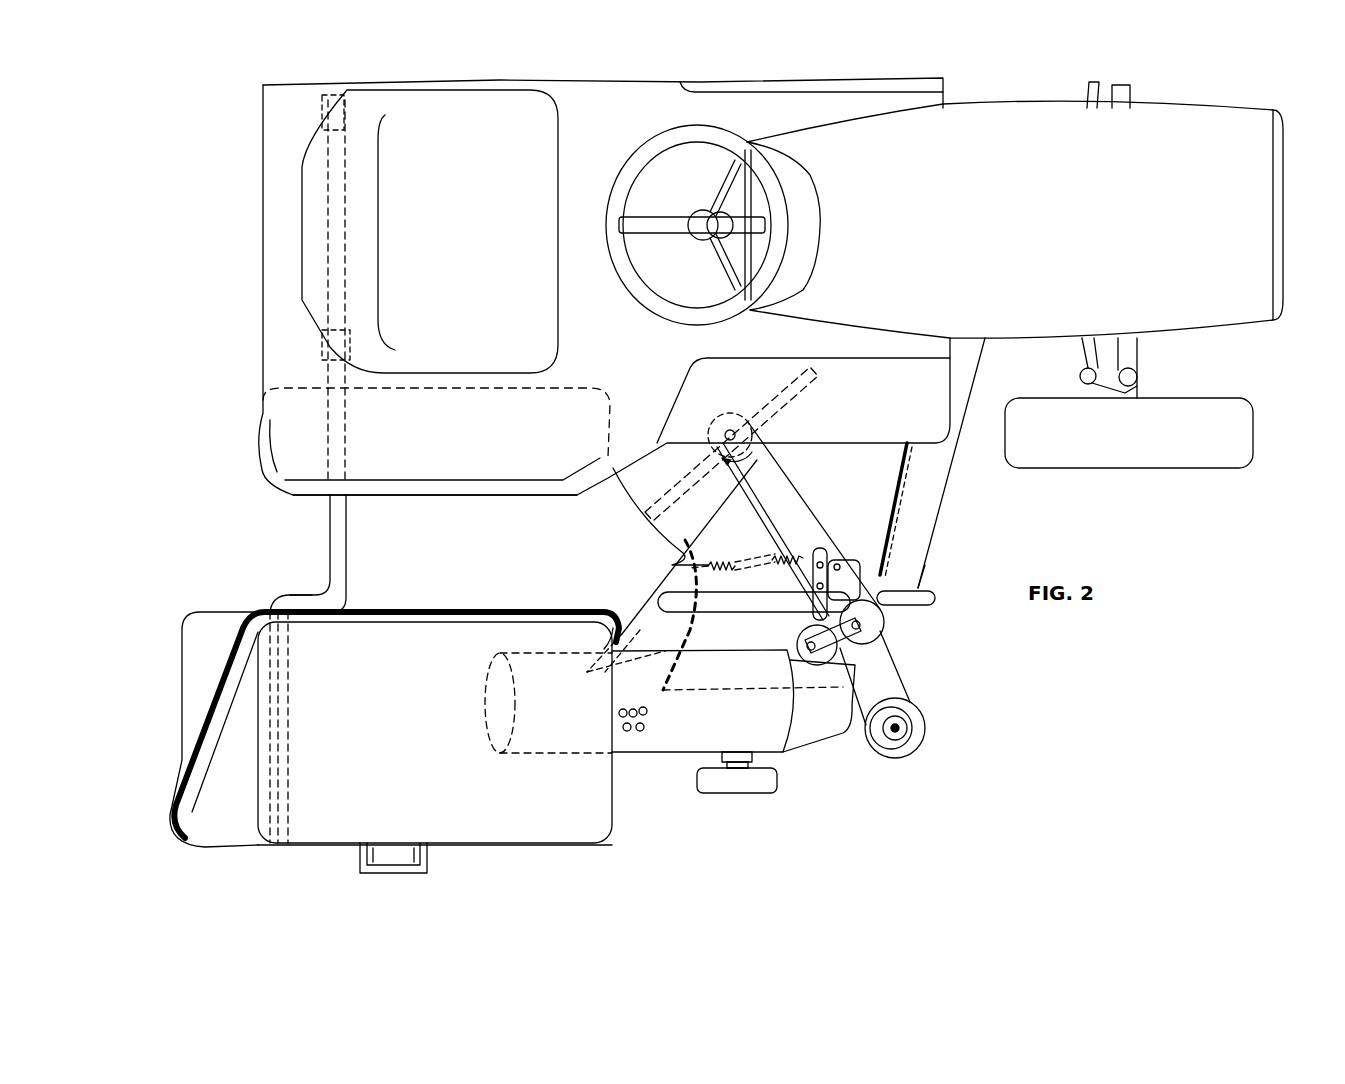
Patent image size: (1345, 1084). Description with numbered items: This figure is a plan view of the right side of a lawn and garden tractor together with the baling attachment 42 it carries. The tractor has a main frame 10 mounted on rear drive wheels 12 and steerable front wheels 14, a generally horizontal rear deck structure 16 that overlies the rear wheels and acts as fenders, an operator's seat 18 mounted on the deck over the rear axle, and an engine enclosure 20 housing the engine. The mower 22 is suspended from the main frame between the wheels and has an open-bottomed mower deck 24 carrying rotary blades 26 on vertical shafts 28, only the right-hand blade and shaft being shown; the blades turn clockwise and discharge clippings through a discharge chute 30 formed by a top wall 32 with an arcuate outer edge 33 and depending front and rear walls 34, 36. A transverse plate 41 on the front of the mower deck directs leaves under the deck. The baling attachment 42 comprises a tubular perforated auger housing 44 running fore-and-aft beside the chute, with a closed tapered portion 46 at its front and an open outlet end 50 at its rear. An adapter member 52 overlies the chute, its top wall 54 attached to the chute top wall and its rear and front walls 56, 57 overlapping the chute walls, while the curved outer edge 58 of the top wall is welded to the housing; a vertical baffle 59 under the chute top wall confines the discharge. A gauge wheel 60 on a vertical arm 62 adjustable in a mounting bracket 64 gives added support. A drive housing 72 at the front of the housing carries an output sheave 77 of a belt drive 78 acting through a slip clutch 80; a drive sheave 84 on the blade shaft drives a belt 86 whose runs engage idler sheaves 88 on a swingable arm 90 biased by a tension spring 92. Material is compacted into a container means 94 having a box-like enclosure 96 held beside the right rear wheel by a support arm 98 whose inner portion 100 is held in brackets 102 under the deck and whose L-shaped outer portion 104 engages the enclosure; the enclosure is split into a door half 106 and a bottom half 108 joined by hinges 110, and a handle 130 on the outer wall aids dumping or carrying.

The main frame 10 is at (1034, 221).
The rear drive wheels 12 is at (474, 488).
The steerable front wheels 14 is at (1248, 420).
The rear deck structure 16 is at (628, 351).
The operator's seat 18 is at (466, 232).
The engine enclosure 20 is at (1272, 152).
The mower 22 is at (908, 477).
The mower deck 24 is at (886, 508).
The rotary blade 26 is at (645, 496).
The blade shaft 28 is at (731, 428).
The discharge chute 30 is at (858, 553).
The top wall of discharge chute 32 is at (915, 585).
The arcuate outer edge 33 is at (626, 668).
The front wall of discharge chute 34 is at (880, 580).
The rear wall of discharge chute 36 is at (678, 554).
The plate 41 is at (945, 452).
The baling attachment 42 is at (560, 846).
The auger housing 44 is at (652, 754).
The tapered portion 46 is at (812, 740).
The outlet end 50 is at (484, 676).
The adapter member 52 is at (636, 622).
The top wall of adapter member 54 is at (756, 634).
The rear wall of adapter member 56 is at (652, 596).
The front wall of adapter member 57 is at (882, 647).
The outer edge of adapter top wall 58 is at (786, 665).
The vertical baffle 59 is at (668, 692).
The gauge wheel 60 is at (763, 793).
The vertical arm 62 is at (735, 770).
The mounting bracket 64 is at (737, 752).
The drive housing 72 is at (893, 678).
The output sheave 77 is at (887, 758).
The belt drive 78 is at (822, 530).
The slip clutch 80 is at (908, 728).
The drive sheave 84 is at (756, 446).
The belt 86 is at (797, 503).
The idler sheaves 88 is at (884, 623).
The swingable arm 90 is at (812, 607).
The tension spring 92 is at (718, 562).
The container means 94 is at (172, 689).
The enclosure 96 is at (388, 638).
The support arm 98 is at (330, 566).
The inner portion of support arm 100 is at (345, 440).
The brackets 102 is at (320, 122).
The L-shaped outer portion 104 is at (286, 600).
The door half 106 is at (408, 784).
The bottom half 108 is at (196, 628).
The hinges 110 is at (327, 618).
The handle 130 is at (397, 868).